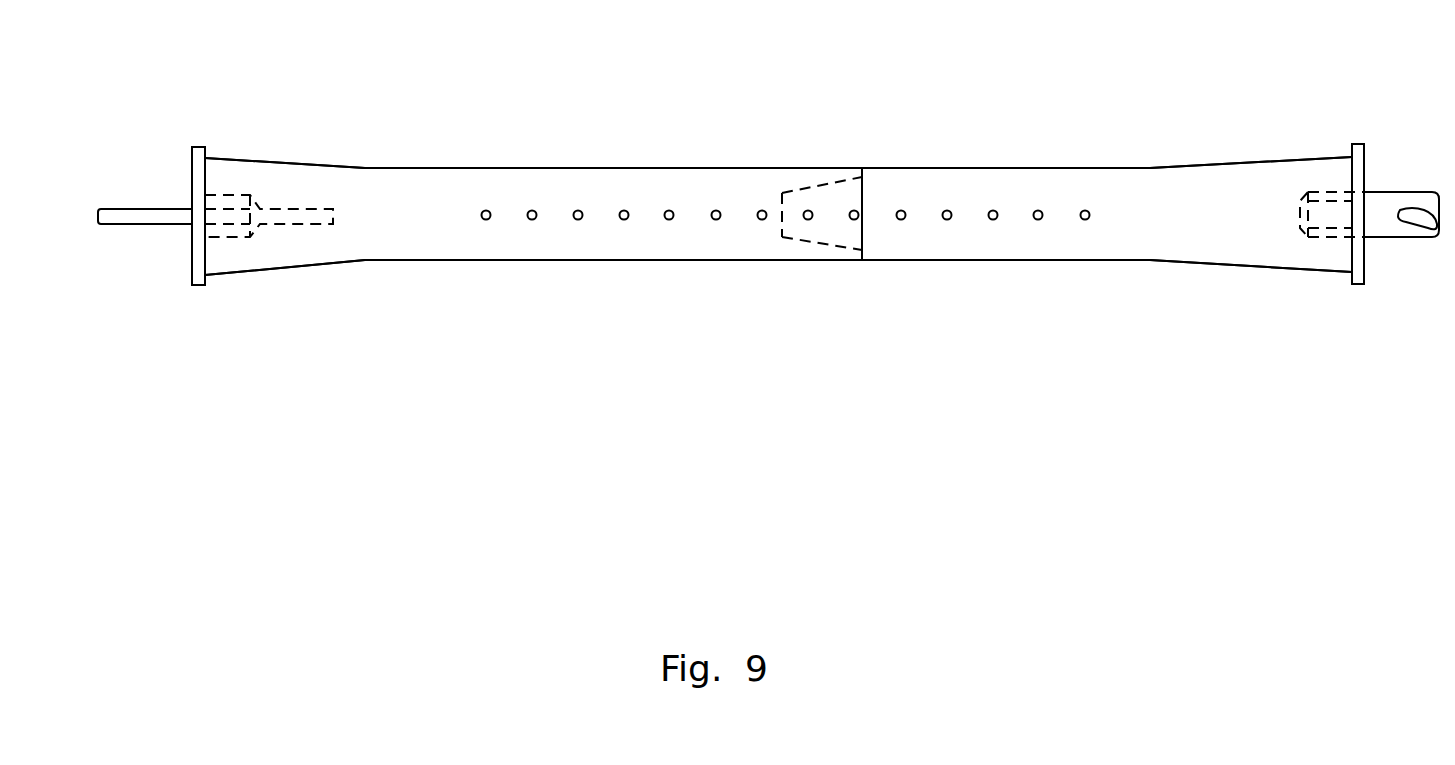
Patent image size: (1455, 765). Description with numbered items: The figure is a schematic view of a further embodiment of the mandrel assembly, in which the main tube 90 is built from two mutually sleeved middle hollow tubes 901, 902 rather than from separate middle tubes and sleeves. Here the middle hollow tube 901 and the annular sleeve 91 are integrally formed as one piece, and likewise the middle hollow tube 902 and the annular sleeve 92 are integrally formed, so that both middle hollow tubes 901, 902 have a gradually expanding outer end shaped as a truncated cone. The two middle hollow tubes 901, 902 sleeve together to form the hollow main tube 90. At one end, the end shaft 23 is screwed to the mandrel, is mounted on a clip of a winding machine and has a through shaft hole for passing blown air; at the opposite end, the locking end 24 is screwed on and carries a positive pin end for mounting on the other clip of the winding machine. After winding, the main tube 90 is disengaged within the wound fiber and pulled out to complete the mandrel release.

The main tube 90 is at (852, 328).
The annular sleeve 91 is at (352, 167).
The annular sleeve 92 is at (1257, 161).
The middle hollow tube 901 is at (583, 168).
The middle hollow tube 902 is at (945, 168).
The end shaft 23 is at (290, 207).
The locking end 24 is at (1408, 192).